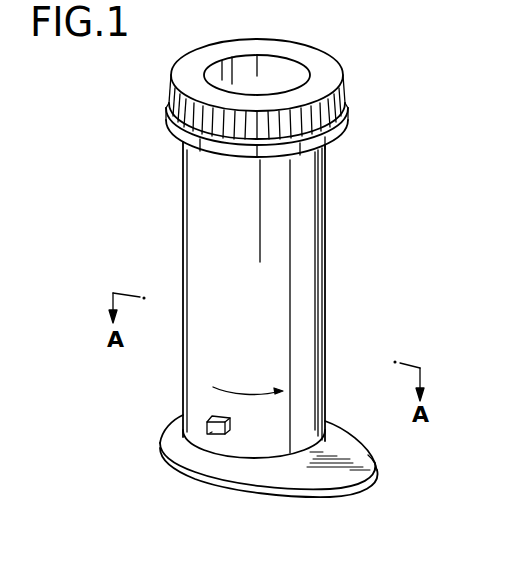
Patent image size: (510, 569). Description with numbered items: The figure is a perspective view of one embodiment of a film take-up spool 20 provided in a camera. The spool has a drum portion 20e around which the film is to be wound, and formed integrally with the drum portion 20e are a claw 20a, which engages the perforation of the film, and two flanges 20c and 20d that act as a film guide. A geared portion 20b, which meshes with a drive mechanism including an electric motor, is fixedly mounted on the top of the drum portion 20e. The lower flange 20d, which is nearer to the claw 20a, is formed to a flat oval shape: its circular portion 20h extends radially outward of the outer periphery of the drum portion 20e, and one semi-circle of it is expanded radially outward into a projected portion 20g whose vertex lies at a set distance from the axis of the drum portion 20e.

The film take-up spool 20 is at (274, 292).
The claw 20a is at (212, 432).
The geared portion 20b is at (285, 89).
The flange 20c is at (280, 130).
The lower flange 20d is at (286, 502).
The drum portion 20e is at (284, 300).
The projected portion 20g is at (375, 472).
The circular portion 20h is at (207, 460).